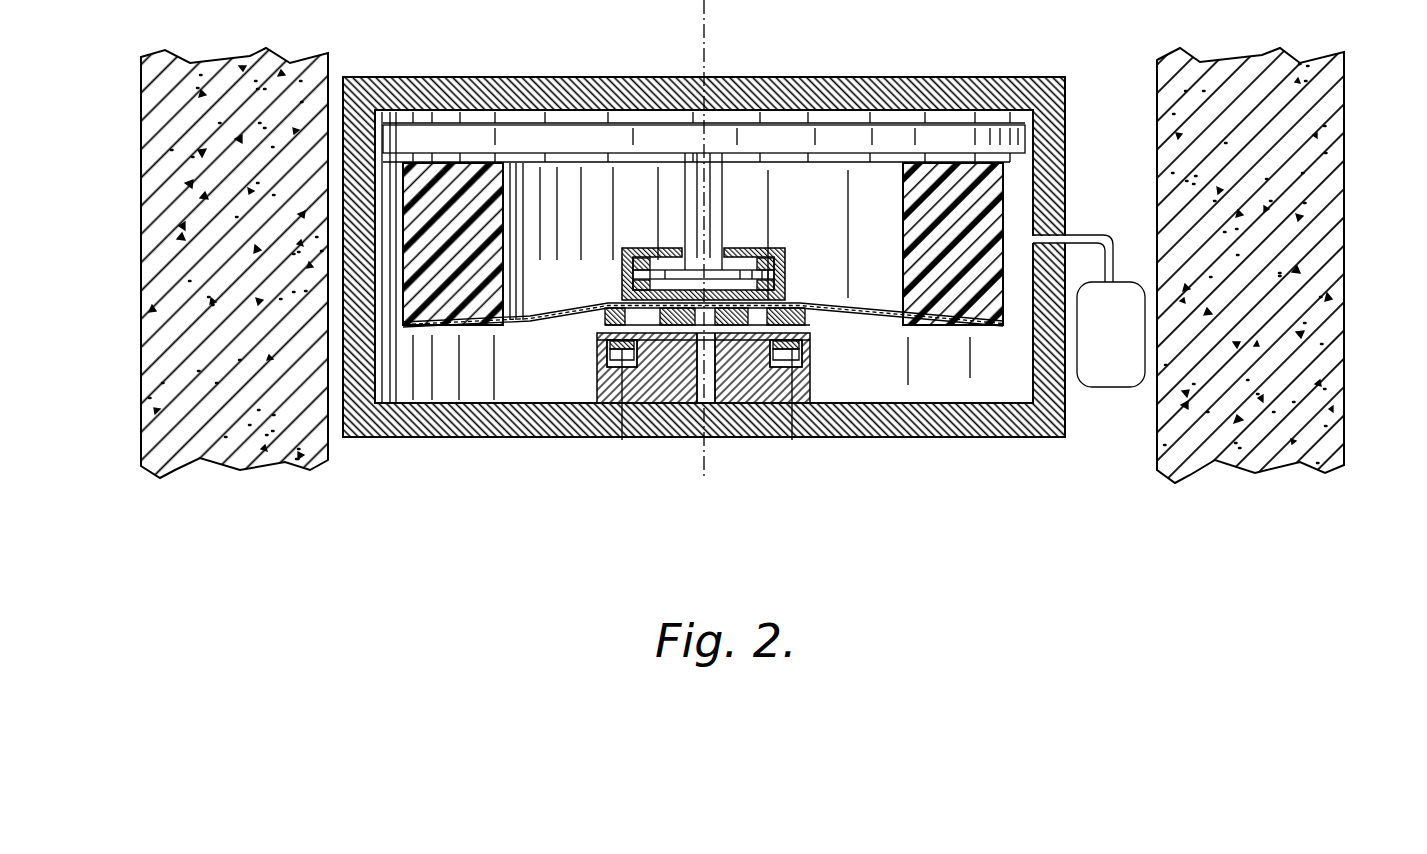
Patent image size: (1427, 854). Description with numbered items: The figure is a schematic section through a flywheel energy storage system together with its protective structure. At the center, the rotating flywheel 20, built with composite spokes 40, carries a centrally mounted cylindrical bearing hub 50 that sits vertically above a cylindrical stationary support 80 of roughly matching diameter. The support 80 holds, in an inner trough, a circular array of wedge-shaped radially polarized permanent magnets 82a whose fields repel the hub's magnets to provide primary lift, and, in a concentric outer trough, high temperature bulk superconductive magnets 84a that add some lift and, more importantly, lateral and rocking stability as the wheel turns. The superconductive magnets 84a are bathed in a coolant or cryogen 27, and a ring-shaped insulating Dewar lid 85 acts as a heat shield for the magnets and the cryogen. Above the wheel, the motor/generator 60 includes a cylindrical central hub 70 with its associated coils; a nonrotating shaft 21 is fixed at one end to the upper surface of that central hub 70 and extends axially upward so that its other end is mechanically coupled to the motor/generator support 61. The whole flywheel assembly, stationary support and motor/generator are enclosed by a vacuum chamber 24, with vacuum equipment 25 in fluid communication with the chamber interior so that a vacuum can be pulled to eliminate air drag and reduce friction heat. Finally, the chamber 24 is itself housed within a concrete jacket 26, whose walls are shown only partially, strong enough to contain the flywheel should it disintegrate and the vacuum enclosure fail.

The flywheel 20 is at (1000, 207).
The nonrotating shaft 21 is at (730, 178).
The vacuum chamber 24 is at (926, 77).
The vacuum equipment 25 is at (1129, 387).
The concrete jacket 26 is at (141, 248).
The coolant or cryogen 27 is at (620, 366).
The composite spokes 40 is at (855, 322).
The bearing hub 50 is at (842, 318).
The motor/generator 60 is at (786, 278).
The motor/generator support 61 is at (724, 125).
The central hub 70 is at (733, 247).
The stationary support 80 is at (812, 392).
The radially polarized magnets 82a is at (683, 340).
The superconductive magnets 84a is at (612, 370).
The Dewar lid 85 is at (600, 336).